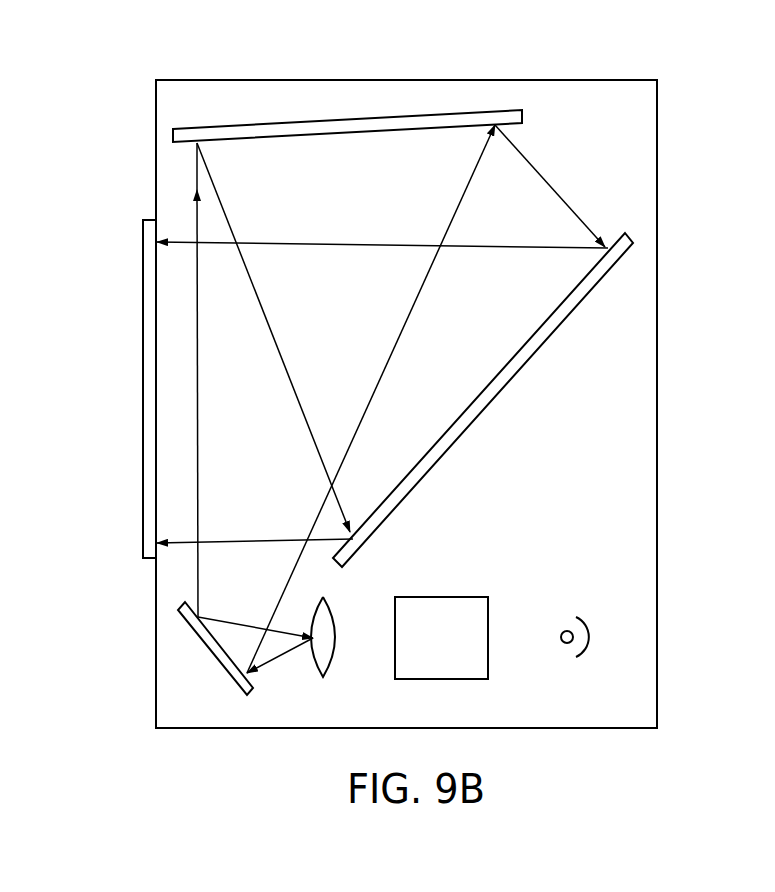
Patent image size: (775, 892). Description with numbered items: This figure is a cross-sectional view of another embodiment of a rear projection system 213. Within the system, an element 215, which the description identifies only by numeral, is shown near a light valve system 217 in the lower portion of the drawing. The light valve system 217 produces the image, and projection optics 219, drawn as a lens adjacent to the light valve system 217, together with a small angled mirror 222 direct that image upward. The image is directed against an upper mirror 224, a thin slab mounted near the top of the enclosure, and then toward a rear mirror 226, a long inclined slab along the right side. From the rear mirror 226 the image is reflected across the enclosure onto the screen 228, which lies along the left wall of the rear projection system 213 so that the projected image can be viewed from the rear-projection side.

The rear projection system 213 is at (497, 80).
The pivot 215 is at (589, 637).
The light valve system 217 is at (488, 665).
The projection optics 219 is at (337, 658).
The mirror 222 is at (213, 655).
The upper mirror 224 is at (292, 123).
The rear mirror 226 is at (587, 295).
The screen 228 is at (142, 327).